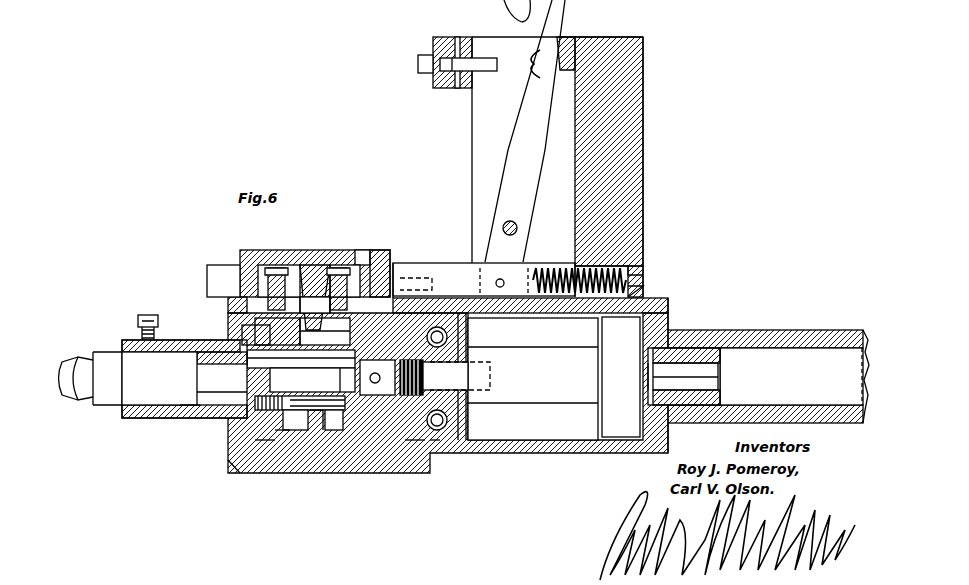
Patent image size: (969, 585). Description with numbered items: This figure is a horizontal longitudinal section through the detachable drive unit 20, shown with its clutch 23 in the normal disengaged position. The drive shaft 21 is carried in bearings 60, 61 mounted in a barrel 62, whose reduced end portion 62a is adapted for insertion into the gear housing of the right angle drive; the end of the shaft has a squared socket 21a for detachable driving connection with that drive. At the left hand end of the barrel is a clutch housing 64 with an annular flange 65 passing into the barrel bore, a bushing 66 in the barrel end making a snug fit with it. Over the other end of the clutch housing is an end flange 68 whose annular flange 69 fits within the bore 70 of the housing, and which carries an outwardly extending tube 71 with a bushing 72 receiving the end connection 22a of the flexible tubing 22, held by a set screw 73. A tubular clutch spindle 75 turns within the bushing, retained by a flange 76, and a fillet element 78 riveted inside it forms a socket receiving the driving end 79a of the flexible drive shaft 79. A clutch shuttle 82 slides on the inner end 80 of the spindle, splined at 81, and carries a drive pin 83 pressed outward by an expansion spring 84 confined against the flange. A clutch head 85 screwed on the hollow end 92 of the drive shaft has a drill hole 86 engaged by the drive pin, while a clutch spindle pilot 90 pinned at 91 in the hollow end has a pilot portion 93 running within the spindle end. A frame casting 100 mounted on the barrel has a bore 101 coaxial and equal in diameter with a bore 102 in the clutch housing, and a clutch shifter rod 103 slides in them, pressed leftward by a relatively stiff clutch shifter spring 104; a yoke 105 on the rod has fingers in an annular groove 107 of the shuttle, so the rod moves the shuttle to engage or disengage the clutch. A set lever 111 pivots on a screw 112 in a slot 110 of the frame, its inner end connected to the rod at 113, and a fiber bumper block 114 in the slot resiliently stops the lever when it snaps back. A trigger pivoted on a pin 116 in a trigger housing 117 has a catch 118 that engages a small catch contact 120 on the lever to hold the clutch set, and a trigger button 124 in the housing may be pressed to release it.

The detachable drive unit 20 is at (648, 205).
The drive shaft 21 is at (518, 395).
The squared socket 21a is at (685, 405).
The flexible tubing 22 is at (113, 352).
The end connection 22a is at (170, 370).
The clutch 23 is at (222, 290).
The bearing 60 is at (466, 345).
The bearing 61 is at (605, 333).
The barrel 62 is at (545, 452).
The reduced end portion 62a is at (795, 330).
The clutch housing 64 is at (318, 252).
The annular flange 65 is at (415, 455).
The bushing 66 is at (436, 450).
The end flange 68 is at (228, 440).
The annular flange 69 is at (250, 473).
The bore 70 is at (262, 473).
The tube 71 is at (160, 418).
The bushing 72 is at (243, 340).
The set screw 73 is at (147, 315).
The tubular clutch spindle 75 is at (228, 400).
The flange 76 is at (240, 458).
The fillet element 78 is at (300, 368).
The flexible drive shaft 79 is at (93, 398).
The driving end 79a is at (260, 368).
The inner end of clutch spindle 80 is at (305, 330).
The spline 81 is at (315, 315).
The clutch shuttle 82 is at (333, 430).
The drive pin 83 is at (322, 430).
The expansion spring 84 is at (283, 440).
The clutch head 85 is at (432, 350).
The drill hole 86 is at (430, 430).
The clutch spindle pilot 90 is at (408, 398).
The pin 91 is at (378, 375).
The hollow end 92 is at (365, 360).
The pilot portion 93 is at (330, 412).
The frame casting 100 is at (632, 142).
The bore 101 is at (470, 265).
The bore 102 is at (370, 265).
The clutch shifter rod 103 is at (404, 275).
The clutch shifter spring 104 is at (620, 262).
The yoke 105 is at (300, 265).
The annular groove 107 is at (290, 430).
The slot 110 is at (483, 165).
The set lever 111 is at (525, 118).
The screw 112 is at (518, 228).
The operative connection 113 is at (505, 280).
The fiber bumper block 114 is at (566, 45).
The pin 116 is at (455, 40).
The trigger housing 117 is at (433, 85).
The catch 118 is at (487, 58).
The catch contact 120 is at (535, 70).
The trigger button 124 is at (425, 55).